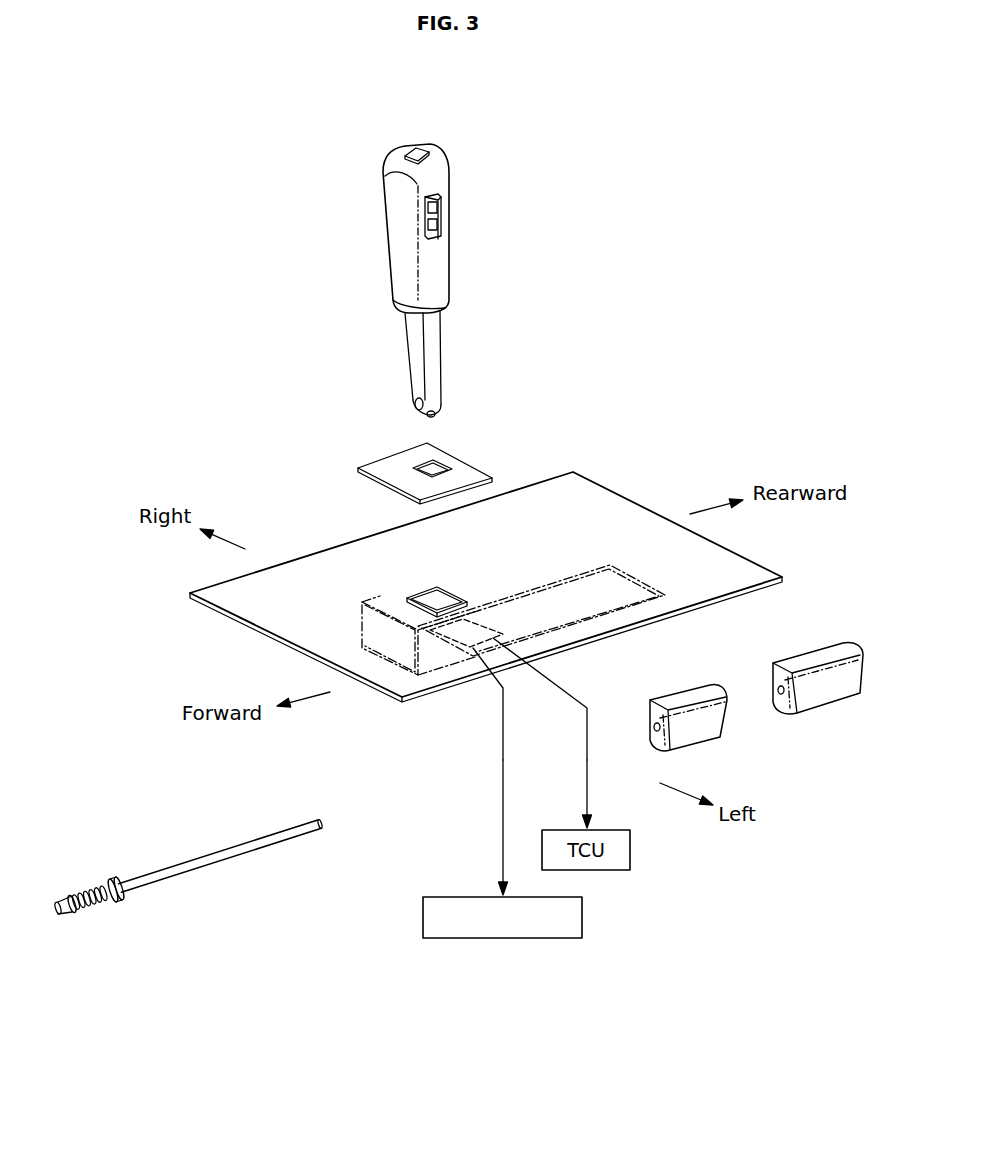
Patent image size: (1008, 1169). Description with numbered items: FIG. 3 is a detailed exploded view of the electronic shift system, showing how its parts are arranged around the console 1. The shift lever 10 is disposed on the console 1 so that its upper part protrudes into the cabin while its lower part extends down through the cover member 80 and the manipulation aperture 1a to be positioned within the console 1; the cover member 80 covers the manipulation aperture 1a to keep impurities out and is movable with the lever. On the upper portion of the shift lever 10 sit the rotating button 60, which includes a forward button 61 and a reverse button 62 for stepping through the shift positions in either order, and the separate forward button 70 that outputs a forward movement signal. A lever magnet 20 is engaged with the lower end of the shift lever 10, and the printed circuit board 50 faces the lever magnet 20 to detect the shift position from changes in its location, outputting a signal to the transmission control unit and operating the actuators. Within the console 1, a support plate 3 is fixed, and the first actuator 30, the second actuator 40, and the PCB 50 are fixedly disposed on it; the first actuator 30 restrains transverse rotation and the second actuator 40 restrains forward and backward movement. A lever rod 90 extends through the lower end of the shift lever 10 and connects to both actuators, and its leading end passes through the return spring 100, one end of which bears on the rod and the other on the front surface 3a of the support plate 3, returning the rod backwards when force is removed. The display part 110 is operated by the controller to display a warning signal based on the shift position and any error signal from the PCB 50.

The console 1 is at (615, 508).
The manipulation aperture 1a is at (410, 597).
The support plate 3 is at (660, 584).
The front surface 3a is at (362, 624).
The shift lever 10 is at (416, 228).
The lever magnet 20 is at (436, 417).
The first actuator 30 is at (726, 732).
The second actuator 40 is at (848, 699).
The printed circuit board 50 is at (456, 652).
The rotating button 60 is at (530, 170).
The forward button 61 is at (439, 200).
The reverse button 62 is at (441, 230).
The forward button 70 is at (417, 151).
The cover member 80 is at (400, 456).
The lever rod 90 is at (182, 877).
The return spring 100 is at (94, 908).
The display part 110 is at (584, 916).